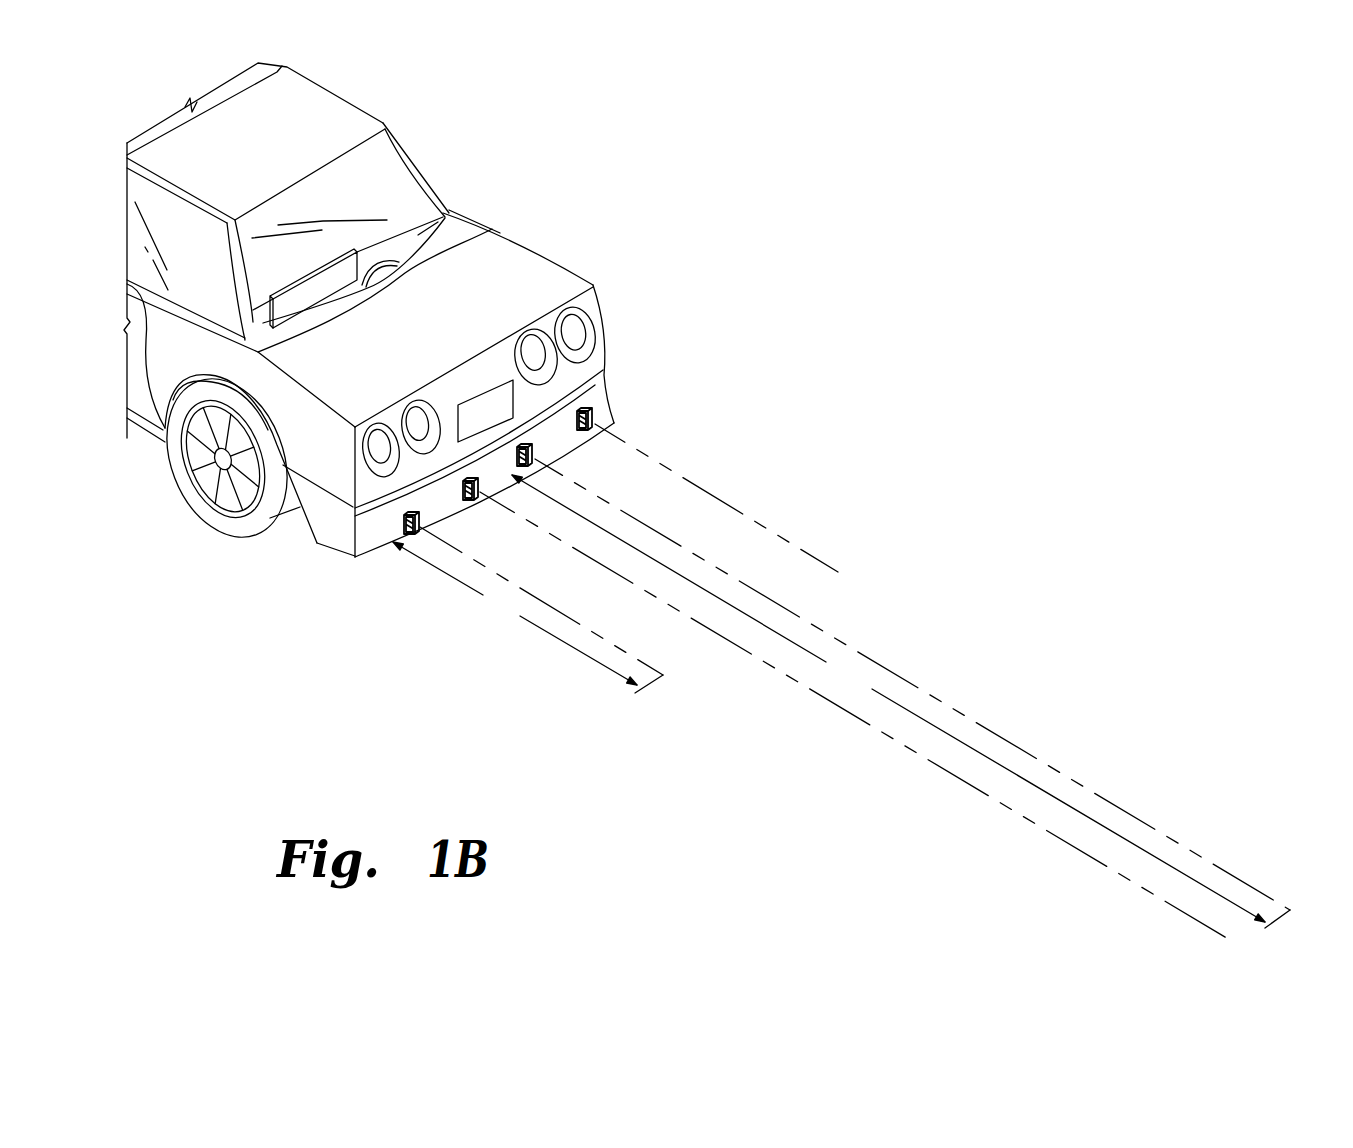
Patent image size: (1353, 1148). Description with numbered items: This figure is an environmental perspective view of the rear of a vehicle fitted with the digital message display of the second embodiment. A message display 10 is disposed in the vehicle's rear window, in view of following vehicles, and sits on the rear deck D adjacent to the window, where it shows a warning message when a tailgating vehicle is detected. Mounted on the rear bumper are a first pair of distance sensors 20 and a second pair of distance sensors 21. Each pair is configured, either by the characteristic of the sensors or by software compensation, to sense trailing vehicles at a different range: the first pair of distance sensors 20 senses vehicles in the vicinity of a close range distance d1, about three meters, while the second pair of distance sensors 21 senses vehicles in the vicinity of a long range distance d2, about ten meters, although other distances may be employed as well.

The message display 10 is at (358, 250).
The rear deck D is at (447, 214).
The first pair of distance sensors 20 is at (420, 517).
The second pair of distance sensors 21 is at (480, 487).
The close range distance d1 is at (528, 617).
The long range distance d2 is at (901, 701).